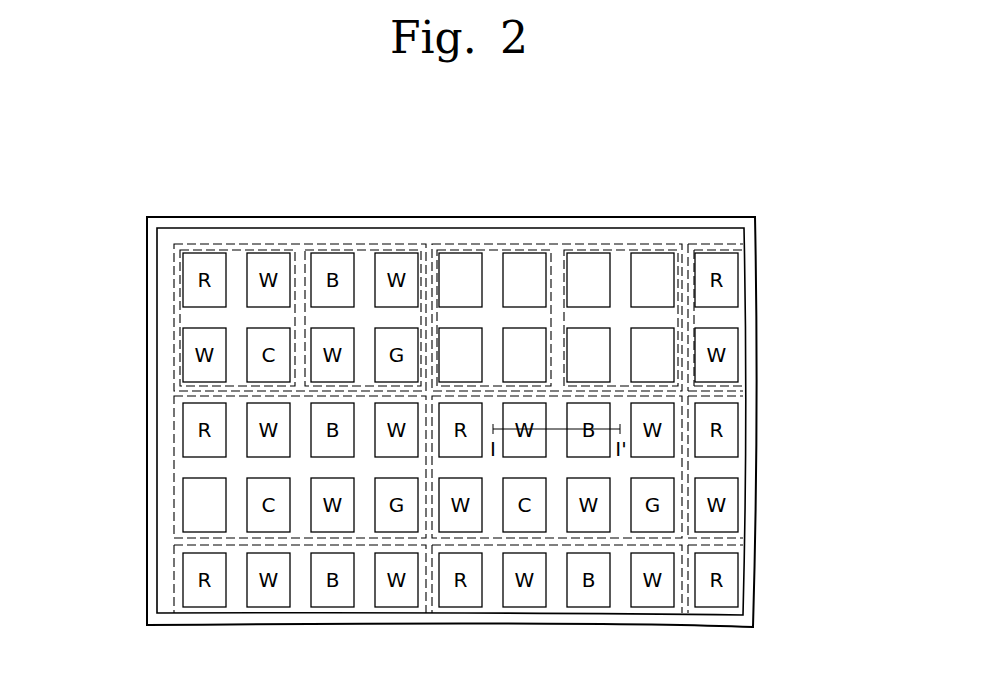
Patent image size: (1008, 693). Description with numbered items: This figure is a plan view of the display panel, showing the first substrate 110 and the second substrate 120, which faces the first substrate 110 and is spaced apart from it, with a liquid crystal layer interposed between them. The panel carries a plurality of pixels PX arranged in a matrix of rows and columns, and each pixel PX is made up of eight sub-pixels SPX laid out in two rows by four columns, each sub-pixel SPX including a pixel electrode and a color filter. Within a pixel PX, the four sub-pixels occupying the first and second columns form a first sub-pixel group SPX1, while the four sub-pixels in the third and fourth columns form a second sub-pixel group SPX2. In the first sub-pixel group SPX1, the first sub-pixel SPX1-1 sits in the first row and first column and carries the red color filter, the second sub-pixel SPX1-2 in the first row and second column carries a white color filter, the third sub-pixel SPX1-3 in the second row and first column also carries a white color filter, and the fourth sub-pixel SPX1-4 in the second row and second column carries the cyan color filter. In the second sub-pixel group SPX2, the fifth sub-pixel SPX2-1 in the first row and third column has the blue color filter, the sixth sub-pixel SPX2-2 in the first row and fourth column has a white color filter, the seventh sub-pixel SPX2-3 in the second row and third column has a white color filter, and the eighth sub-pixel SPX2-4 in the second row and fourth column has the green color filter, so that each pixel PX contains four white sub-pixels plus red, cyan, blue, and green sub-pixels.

The first substrate 110 is at (147, 430).
The second substrate 120 is at (158, 390).
The pixel PX is at (174, 475).
The sub-pixel SPX is at (183, 513).
The first sub-pixel group SPX1 is at (230, 249).
The second sub-pixel group SPX2 is at (359, 249).
The first sub-pixel SPX1-1 is at (461, 253).
The second sub-pixel SPX1-2 is at (525, 253).
The third sub-pixel SPX1-3 is at (483, 342).
The fourth sub-pixel SPX1-4 is at (547, 342).
The fifth sub-pixel SPX2-1 is at (588, 253).
The sixth sub-pixel SPX2-2 is at (652, 253).
The seventh sub-pixel SPX2-3 is at (593, 328).
The eighth sub-pixel SPX2-4 is at (675, 358).